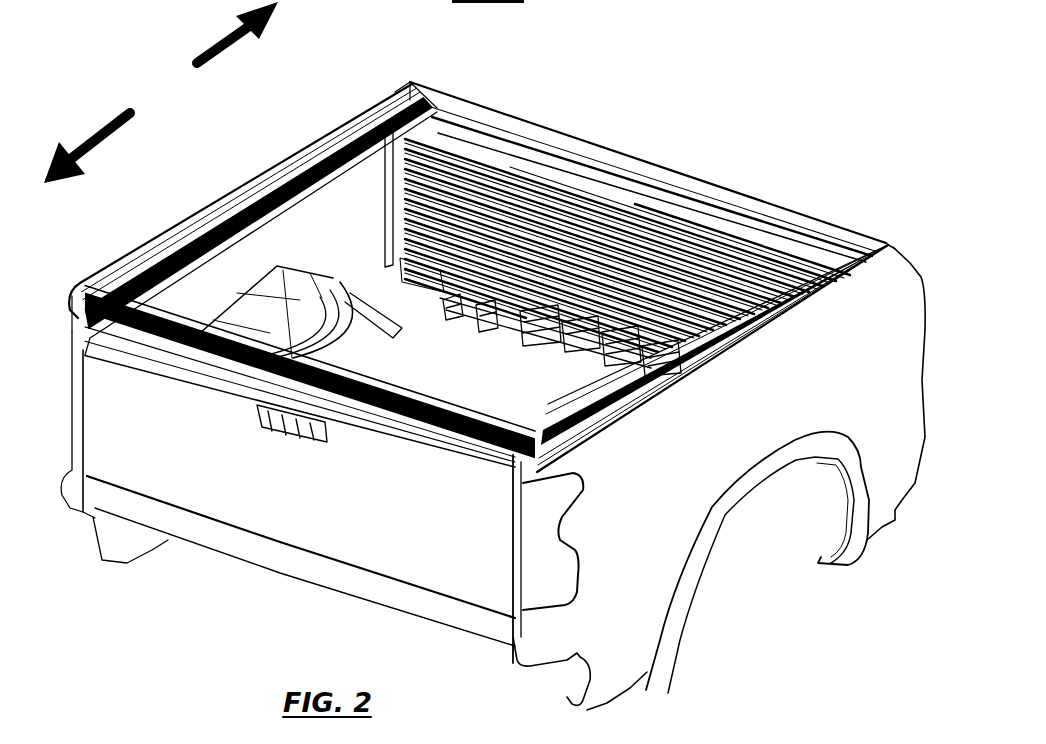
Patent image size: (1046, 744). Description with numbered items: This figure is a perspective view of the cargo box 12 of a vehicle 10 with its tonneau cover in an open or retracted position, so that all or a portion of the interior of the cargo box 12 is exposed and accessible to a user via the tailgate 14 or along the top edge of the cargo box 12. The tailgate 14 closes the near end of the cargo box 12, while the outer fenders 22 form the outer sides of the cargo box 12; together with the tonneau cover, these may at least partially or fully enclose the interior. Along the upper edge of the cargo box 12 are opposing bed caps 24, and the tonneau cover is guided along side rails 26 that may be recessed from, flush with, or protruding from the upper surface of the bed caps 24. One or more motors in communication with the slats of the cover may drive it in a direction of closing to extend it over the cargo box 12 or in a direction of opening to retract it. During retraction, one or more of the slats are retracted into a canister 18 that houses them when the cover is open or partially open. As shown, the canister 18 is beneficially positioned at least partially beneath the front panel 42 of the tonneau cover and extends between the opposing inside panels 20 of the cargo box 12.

The vehicle 10 is at (126, 44).
The cargo box 12 is at (408, 330).
The tailgate 14 is at (230, 498).
The canister 18 is at (550, 240).
The inside panels 20 is at (257, 240).
The outer fenders 22 is at (730, 445).
The bed caps 24 is at (197, 217).
The side rails 26 is at (857, 253).
The front panel 42 is at (712, 197).